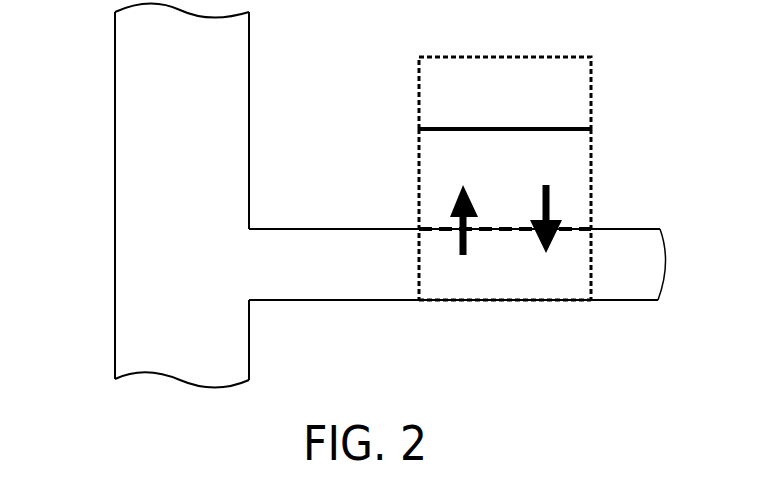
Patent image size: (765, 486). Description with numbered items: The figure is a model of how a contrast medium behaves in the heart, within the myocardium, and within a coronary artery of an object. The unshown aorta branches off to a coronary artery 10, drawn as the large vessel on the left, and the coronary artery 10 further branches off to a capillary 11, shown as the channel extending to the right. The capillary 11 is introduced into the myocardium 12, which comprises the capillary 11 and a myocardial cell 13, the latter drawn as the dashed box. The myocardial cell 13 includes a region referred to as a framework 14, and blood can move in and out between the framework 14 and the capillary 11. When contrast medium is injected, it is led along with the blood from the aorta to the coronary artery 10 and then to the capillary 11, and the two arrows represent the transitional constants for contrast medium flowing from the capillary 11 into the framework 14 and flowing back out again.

The coronary artery 10 is at (115, 90).
The capillary 11 is at (345, 300).
The myocardium 12 is at (370, 116).
The myocardial cell 13 is at (600, 85).
The framework 14 is at (591, 183).